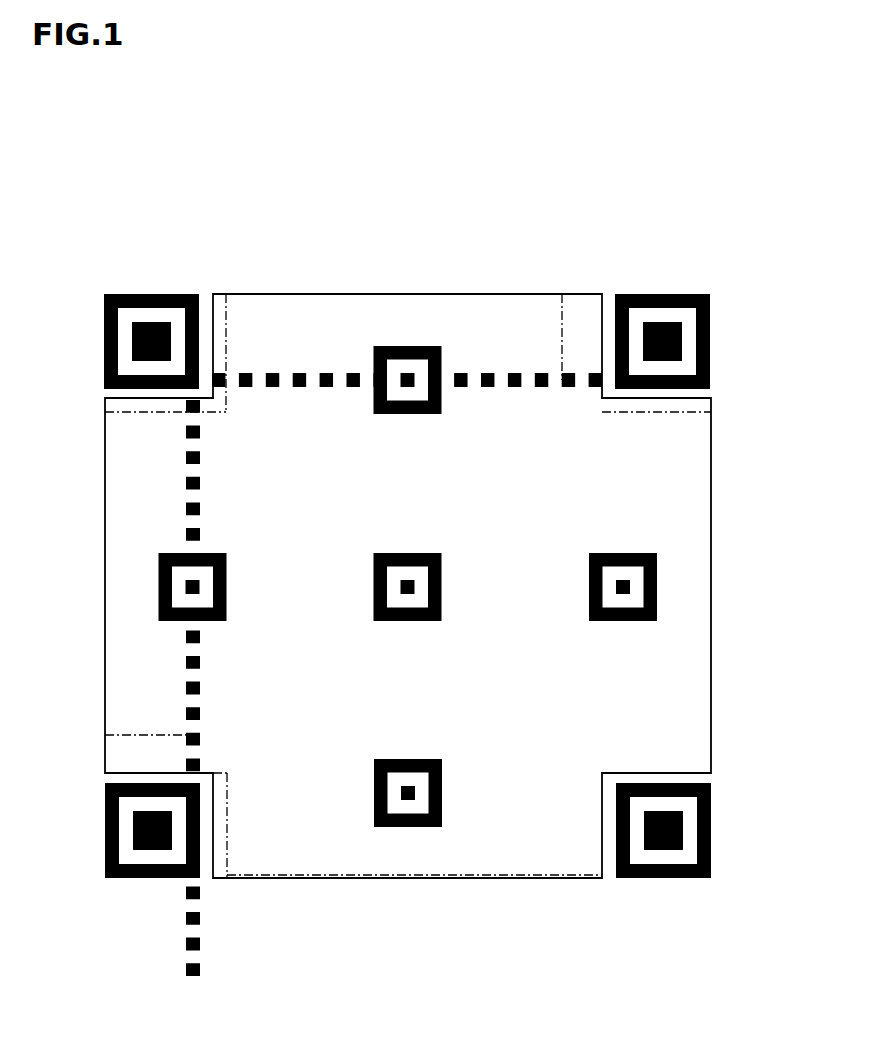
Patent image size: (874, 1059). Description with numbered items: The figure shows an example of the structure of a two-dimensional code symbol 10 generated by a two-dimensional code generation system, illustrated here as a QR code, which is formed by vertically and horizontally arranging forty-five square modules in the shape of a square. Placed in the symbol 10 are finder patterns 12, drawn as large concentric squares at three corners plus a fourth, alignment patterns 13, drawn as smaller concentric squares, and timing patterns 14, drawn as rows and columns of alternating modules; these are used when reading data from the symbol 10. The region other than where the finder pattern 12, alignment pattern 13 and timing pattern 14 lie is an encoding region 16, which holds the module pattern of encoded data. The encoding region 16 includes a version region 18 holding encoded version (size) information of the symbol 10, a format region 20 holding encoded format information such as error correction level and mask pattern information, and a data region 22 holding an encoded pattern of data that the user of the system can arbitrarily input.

The two-dimensional code symbol 10 is at (503, 212).
The finder pattern 12 is at (150, 294).
The alignment pattern 13 is at (410, 348).
The timing pattern 14 is at (312, 373).
The encoding region 16 is at (736, 589).
The version region 18 is at (583, 294).
The format region 20 is at (215, 294).
The data region 22 is at (712, 677).